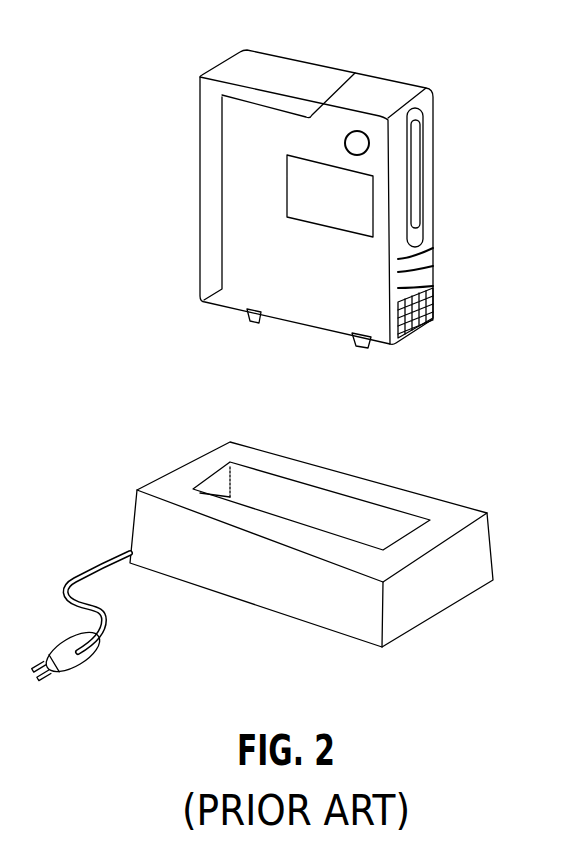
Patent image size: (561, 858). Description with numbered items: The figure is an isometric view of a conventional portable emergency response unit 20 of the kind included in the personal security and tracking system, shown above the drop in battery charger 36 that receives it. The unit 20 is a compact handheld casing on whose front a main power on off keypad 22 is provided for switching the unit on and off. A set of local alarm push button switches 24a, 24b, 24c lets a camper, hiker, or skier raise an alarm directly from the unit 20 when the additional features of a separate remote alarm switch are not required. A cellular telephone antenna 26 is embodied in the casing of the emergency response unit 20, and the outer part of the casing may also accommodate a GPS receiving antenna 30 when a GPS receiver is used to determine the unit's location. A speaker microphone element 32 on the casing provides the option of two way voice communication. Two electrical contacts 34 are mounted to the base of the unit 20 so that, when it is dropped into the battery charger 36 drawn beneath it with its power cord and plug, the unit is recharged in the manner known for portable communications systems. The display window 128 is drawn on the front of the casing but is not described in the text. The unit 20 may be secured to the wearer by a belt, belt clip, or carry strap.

The portable emergency response unit 20 is at (323, 64).
The main power on off keypad 22 is at (437, 318).
The local alarm push button switch 24a is at (433, 249).
The local alarm push button switch 24b is at (433, 267).
The local alarm push button switch 24c is at (433, 287).
The cellular telephone antenna 26 is at (430, 143).
The GPS receiving antenna 30 is at (207, 128).
The speaker microphone element 32 is at (358, 131).
The electrical contacts 34 is at (253, 323).
The drop in battery charger 36 is at (496, 537).
The display window 128 is at (376, 192).